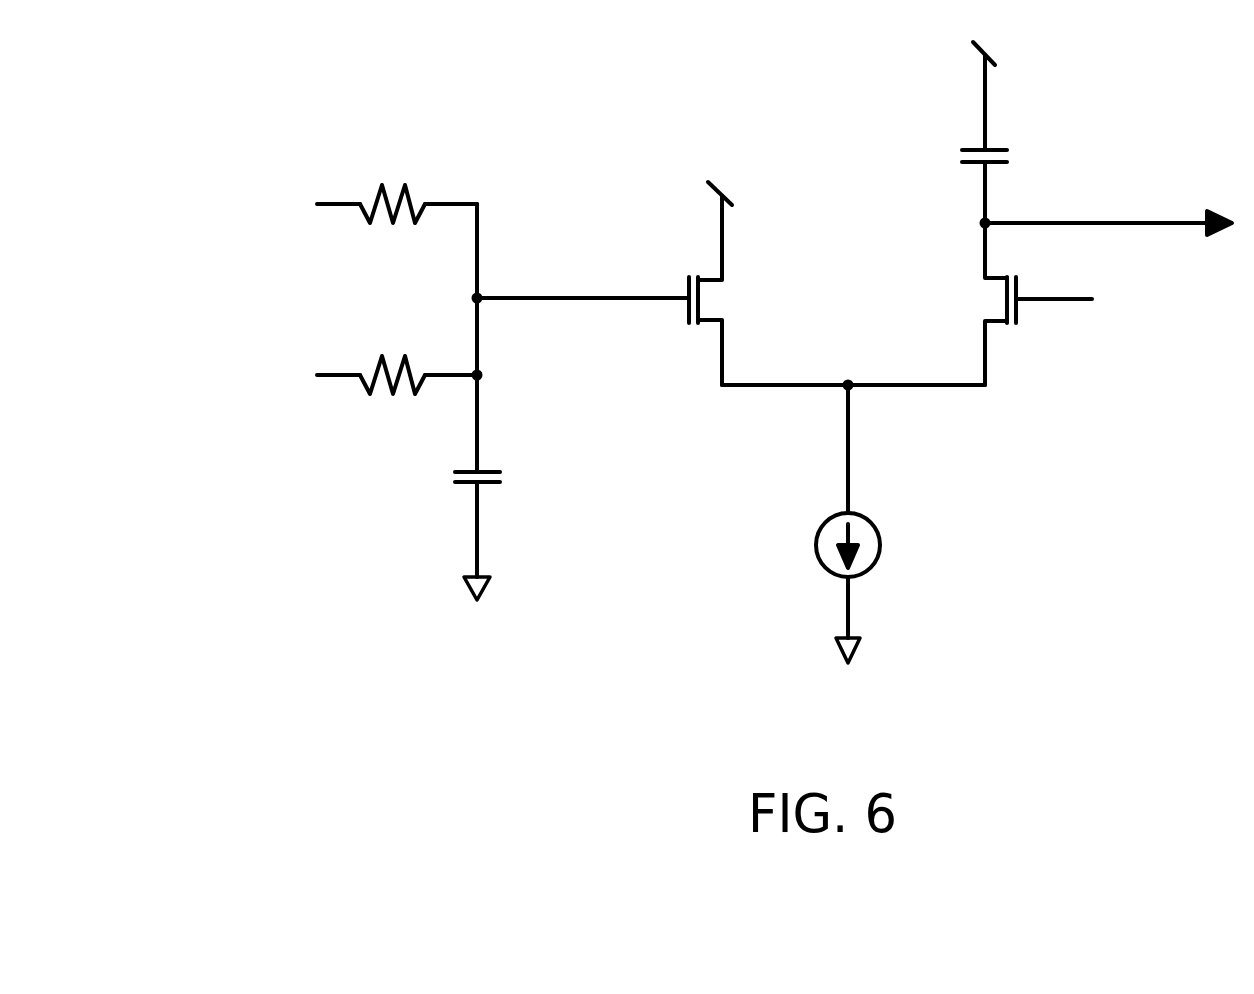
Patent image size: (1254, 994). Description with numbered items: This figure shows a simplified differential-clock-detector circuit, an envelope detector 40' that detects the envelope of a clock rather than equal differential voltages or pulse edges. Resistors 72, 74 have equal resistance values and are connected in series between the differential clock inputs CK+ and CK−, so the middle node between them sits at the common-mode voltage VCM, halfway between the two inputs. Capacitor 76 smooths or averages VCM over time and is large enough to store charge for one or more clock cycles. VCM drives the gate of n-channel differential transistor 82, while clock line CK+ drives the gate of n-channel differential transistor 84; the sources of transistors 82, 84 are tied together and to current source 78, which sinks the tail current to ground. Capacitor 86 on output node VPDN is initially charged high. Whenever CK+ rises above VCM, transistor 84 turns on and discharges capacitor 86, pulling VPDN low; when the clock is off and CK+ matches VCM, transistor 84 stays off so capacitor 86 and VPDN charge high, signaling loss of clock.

The envelope detector 40' is at (733, 409).
The resistor 72 is at (403, 185).
The resistor 74 is at (403, 355).
The capacitor 76 is at (488, 471).
The current source 78 is at (880, 556).
The n-channel differential transistor 82 is at (709, 299).
The n-channel differential transistor 84 is at (997, 297).
The capacitor 86 is at (994, 151).